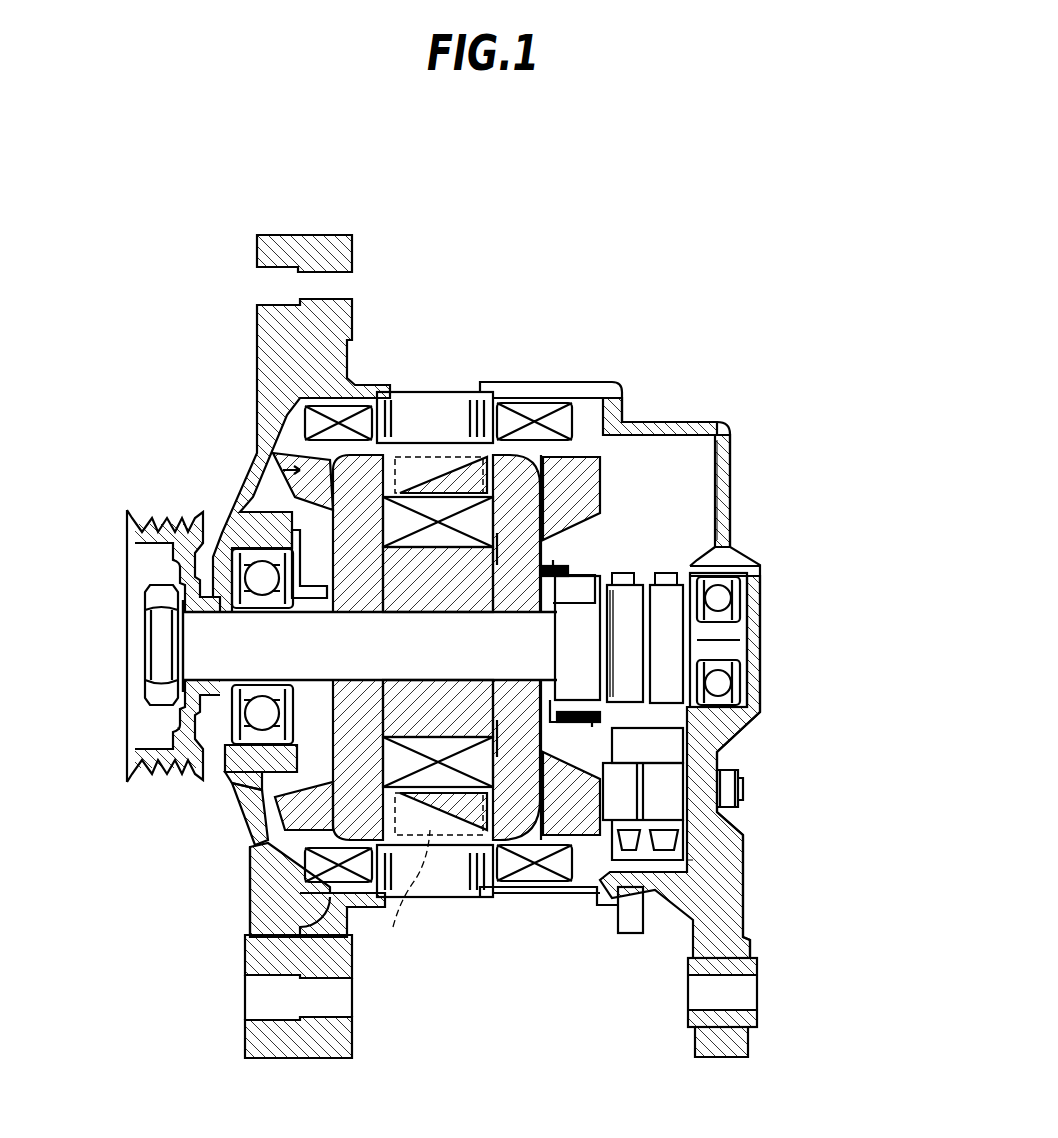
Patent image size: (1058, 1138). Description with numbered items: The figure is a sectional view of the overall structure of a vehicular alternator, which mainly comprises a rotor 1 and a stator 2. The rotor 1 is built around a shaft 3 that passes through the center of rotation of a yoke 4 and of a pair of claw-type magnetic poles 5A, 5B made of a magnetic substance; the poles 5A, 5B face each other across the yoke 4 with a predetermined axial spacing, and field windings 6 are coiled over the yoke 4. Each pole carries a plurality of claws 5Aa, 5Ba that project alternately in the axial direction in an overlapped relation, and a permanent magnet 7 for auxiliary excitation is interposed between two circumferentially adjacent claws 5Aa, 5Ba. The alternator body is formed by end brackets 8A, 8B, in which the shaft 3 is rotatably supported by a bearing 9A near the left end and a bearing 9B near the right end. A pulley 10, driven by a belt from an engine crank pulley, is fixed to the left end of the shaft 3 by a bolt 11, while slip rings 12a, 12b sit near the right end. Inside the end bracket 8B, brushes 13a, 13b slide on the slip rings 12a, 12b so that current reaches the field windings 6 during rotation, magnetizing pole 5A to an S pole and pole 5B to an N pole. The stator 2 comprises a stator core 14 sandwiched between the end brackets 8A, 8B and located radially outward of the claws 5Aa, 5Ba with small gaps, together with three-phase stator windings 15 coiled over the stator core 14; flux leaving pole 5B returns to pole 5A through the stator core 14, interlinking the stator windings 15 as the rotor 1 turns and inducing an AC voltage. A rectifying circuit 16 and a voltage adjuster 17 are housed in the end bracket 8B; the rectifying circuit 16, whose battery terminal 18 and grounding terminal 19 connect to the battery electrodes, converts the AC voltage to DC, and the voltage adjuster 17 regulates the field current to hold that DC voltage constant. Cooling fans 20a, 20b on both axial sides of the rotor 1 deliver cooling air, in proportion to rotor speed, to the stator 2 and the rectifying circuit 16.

The rotor 1 is at (356, 516).
The stator 2 is at (365, 587).
The shaft 3 is at (213, 638).
The yoke 4 is at (373, 573).
The claw-type magnetic pole 5A is at (345, 462).
The claw-type magnetic pole 5B is at (505, 505).
The claws 5Aa is at (453, 457).
The claws 5Ba is at (475, 488).
The field windings 6 is at (548, 475).
The permanent magnet 7 is at (406, 890).
The end bracket 8A is at (263, 393).
The end bracket 8B is at (760, 642).
The bearing 9A is at (240, 552).
The bearing 9B is at (742, 595).
The pulley 10 is at (127, 758).
The bolt 11 is at (140, 643).
The slip ring 12a is at (765, 712).
The slip ring 12b is at (705, 568).
The brush 13a is at (618, 578).
The brush 13b is at (668, 615).
The stator core 14 is at (408, 392).
The stator windings 15 is at (313, 865).
The rectifying circuit 16 is at (657, 795).
The voltage adjuster 17 is at (657, 752).
The battery terminal 18 is at (630, 935).
The grounding terminal 19 is at (743, 797).
The cooling fan 20a is at (270, 815).
The cooling fan 20b is at (683, 853).